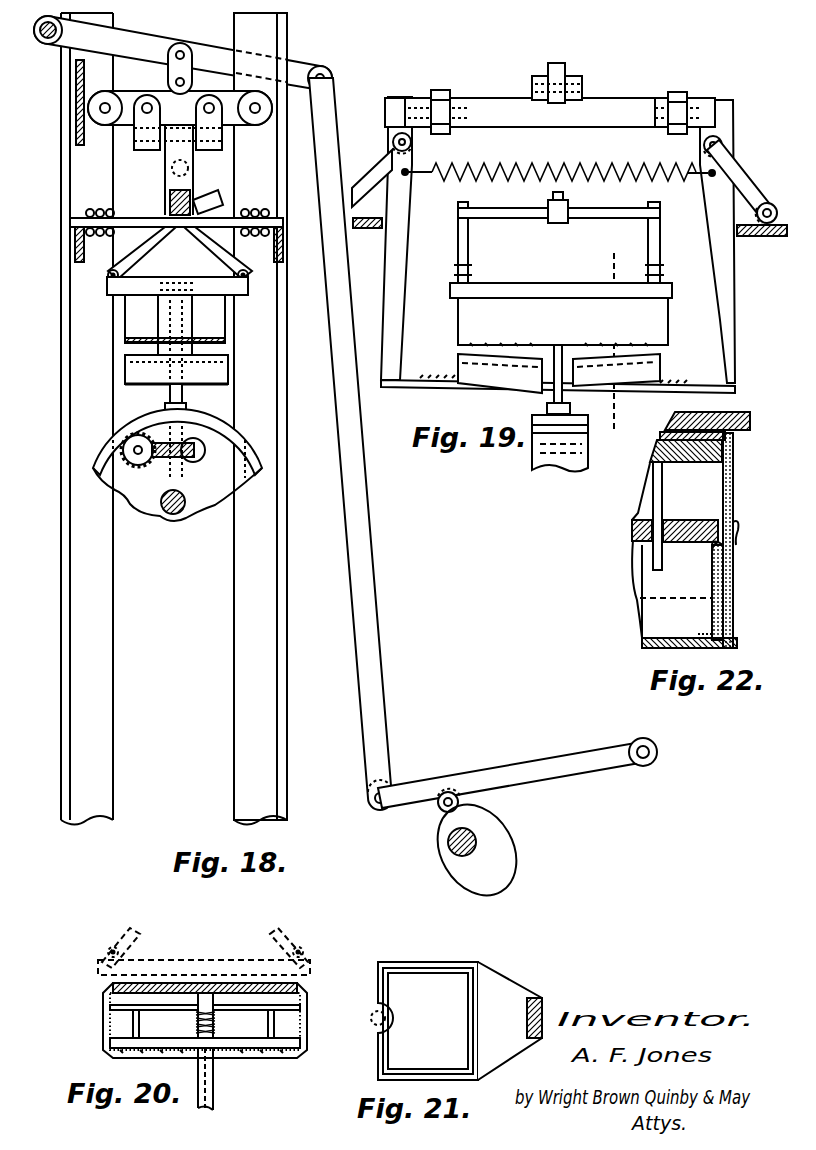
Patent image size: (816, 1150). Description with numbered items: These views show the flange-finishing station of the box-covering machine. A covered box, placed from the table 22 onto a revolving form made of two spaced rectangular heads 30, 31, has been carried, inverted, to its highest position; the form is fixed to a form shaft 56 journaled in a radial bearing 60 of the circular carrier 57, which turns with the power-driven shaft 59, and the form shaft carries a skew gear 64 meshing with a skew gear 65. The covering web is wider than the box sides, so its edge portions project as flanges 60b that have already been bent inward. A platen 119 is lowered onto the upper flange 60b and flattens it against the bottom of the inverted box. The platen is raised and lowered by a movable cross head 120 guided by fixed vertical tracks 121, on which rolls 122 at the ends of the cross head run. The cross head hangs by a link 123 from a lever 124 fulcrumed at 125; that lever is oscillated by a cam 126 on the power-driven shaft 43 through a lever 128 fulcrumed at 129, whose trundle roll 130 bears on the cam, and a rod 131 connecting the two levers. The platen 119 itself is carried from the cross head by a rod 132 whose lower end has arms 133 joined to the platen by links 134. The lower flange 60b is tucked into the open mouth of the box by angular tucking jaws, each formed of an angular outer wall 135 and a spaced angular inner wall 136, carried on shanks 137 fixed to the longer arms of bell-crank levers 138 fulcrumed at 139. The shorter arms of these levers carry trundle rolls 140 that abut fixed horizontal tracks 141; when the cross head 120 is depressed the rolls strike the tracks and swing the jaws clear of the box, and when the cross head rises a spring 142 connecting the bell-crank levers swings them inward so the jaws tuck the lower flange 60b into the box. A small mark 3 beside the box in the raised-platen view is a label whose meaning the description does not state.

In FIG. 20, the casing wall 3 is at (105, 1025).
In FIG. 19, the table 22 is at (614, 350).
In FIG. 22, the head 30 is at (687, 523).
In FIG. 20, the head 30 is at (253, 1048).
In FIG. 22, the head 31 is at (692, 460).
In FIG. 20, the head 31 is at (237, 1002).
In FIG. 18, the power-driven shaft 43 is at (449, 856).
In FIG. 18, the form shaft 56 is at (168, 395).
In FIG. 19, the form shaft 56 is at (553, 350).
In FIG. 22, the form shaft 56 is at (657, 516).
In FIG. 20, the form shaft 56 is at (203, 1093).
In FIG. 18, the circular carrier 57 is at (235, 452).
In FIG. 19, the circular carrier 57 is at (578, 460).
In FIG. 18, the power-driven shaft 59 is at (172, 517).
In FIG. 22, the radial bearing 60 is at (733, 495).
In FIG. 20, the radial bearing 60 is at (309, 1020).
In FIG. 22, the flange 60b is at (700, 580).
In FIG. 20, the flange 60b is at (302, 986).
In FIG. 18, the skew gear 64 is at (203, 458).
In FIG. 18, the skew gear 65 is at (120, 438).
In FIG. 18, the platen 119 is at (128, 287).
In FIG. 19, the platen 119 is at (532, 288).
In FIG. 22, the platen 119 is at (745, 410).
In FIG. 20, the platen 119 is at (208, 957).
In FIG. 18, the cross head 120 is at (233, 122).
In FIG. 19, the cross head 120 is at (606, 116).
In FIG. 18, the vertical track 121 is at (88, 118).
In FIG. 18, the roll 122 is at (105, 126).
In FIG. 19, the roll 122 is at (445, 95).
In FIG. 18, the link 123 is at (170, 70).
In FIG. 19, the link 123 is at (560, 74).
In FIG. 18, the lever 124 is at (153, 44).
In FIG. 18, the fulcrum 125 is at (45, 45).
In FIG. 18, the cam 126 is at (496, 845).
In FIG. 18, the lever 128 is at (545, 760).
In FIG. 18, the fulcrum 129 is at (658, 752).
In FIG. 18, the trundle roll 130 is at (462, 803).
In FIG. 18, the rod 131 is at (378, 596).
In FIG. 18, the rod 132 is at (219, 196).
In FIG. 19, the rod 132 is at (565, 198).
In FIG. 19, the arm 133 is at (623, 210).
In FIG. 18, the link 134 is at (205, 247).
In FIG. 19, the link 134 is at (462, 254).
In FIG. 20, the link 134 is at (143, 935).
In FIG. 18, the angular outer wall 135 is at (222, 372).
In FIG. 19, the angular outer wall 135 is at (515, 377).
In FIG. 22, the angular outer wall 135 is at (735, 605).
In FIG. 21, the angular outer wall 135 is at (457, 962).
In FIG. 22, the angular inner wall 136 is at (713, 612).
In FIG. 21, the angular inner wall 136 is at (428, 978).
In FIG. 19, the shank 137 is at (539, 333).
In FIG. 21, the shank 137 is at (507, 988).
In FIG. 18, the bell-crank lever 138 is at (163, 303).
In FIG. 19, the bell-crank lever 138 is at (402, 330).
In FIG. 21, the bell-crank lever 138 is at (545, 1007).
In FIG. 19, the fulcrum 139 is at (392, 142).
In FIG. 18, the trundle roll 140 is at (172, 205).
In FIG. 19, the trundle roll 140 is at (777, 200).
In FIG. 18, the horizontal track 141 is at (232, 221).
In FIG. 19, the horizontal track 141 is at (368, 230).
In FIG. 19, the spring 142 is at (515, 167).